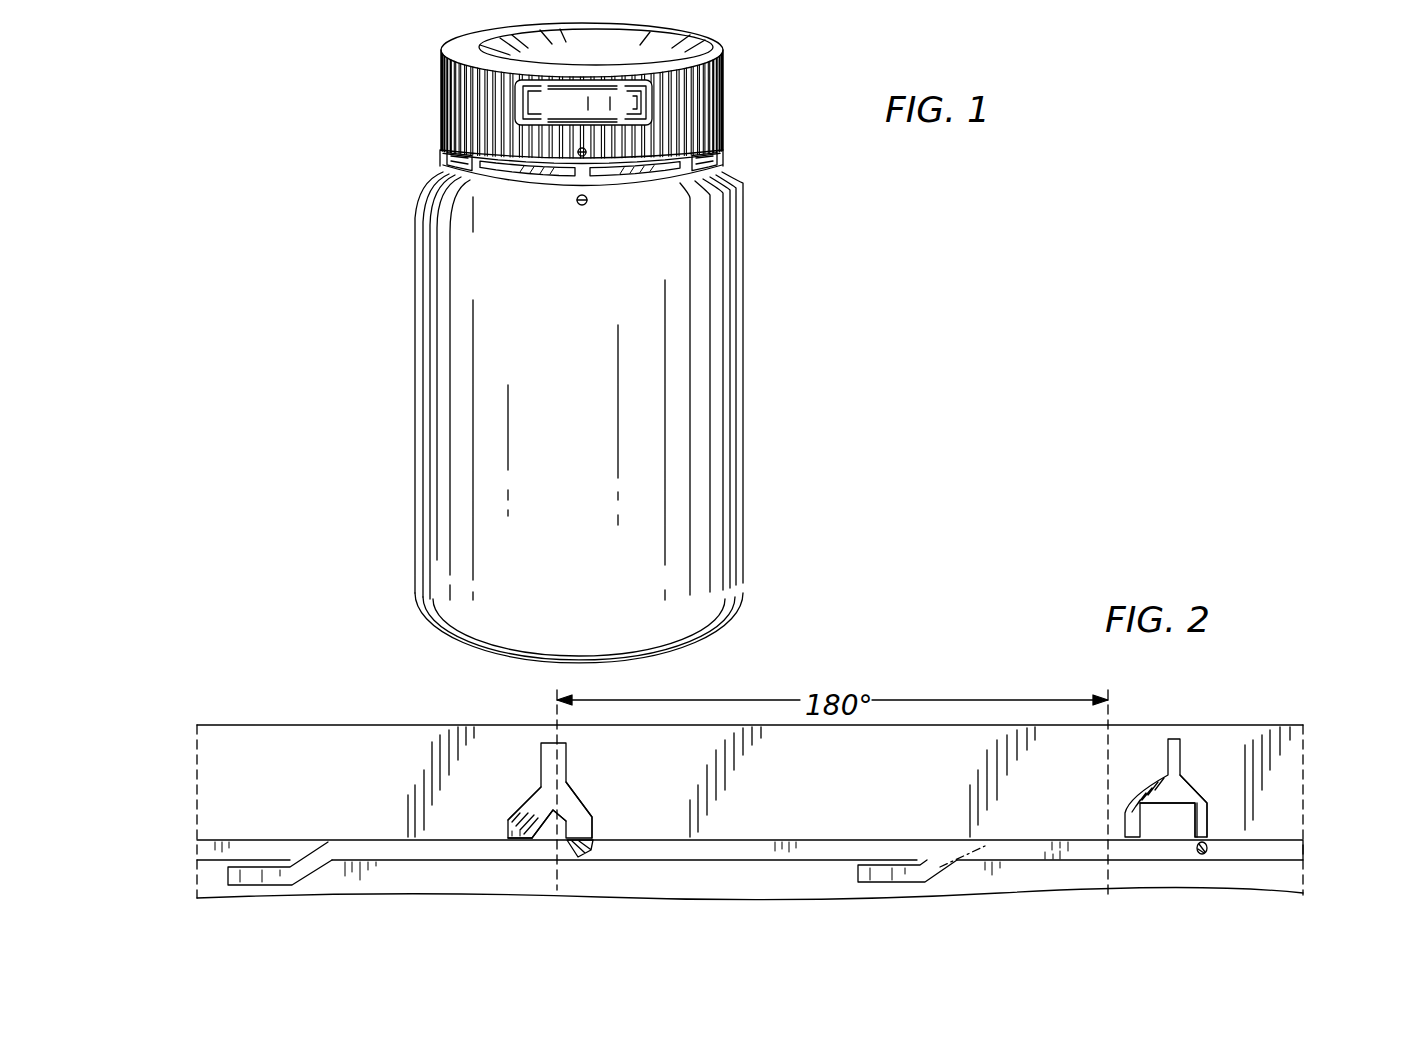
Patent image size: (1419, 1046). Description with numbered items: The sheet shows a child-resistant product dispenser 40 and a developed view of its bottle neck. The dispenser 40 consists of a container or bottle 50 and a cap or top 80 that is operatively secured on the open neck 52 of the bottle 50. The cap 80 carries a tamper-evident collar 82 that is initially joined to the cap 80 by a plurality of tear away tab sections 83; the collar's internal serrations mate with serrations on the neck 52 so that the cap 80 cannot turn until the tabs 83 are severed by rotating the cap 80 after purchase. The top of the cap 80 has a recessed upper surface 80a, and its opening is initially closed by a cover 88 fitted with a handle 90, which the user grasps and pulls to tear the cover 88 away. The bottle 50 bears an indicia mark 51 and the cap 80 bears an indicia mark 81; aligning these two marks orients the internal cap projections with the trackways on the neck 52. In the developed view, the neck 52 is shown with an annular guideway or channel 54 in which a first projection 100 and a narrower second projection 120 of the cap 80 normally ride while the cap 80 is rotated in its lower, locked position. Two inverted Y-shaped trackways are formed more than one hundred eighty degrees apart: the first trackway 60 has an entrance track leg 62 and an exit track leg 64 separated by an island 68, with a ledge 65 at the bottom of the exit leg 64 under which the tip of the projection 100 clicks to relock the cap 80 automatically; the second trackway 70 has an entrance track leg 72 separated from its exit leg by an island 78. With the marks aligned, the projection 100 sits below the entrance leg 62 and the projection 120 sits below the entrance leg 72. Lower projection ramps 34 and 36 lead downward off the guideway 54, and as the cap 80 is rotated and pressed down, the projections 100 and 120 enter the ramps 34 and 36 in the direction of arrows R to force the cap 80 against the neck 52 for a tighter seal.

In FIG. 1, the product dispenser 40 is at (762, 342).
In FIG. 1, the container or bottle 50 is at (748, 408).
In FIG. 1, the indicia mark 51 is at (582, 206).
In FIG. 1, the cap or top 80 is at (723, 75).
In FIG. 1, the cap top recess 80a is at (478, 36).
In FIG. 1, the indicia mark 81 is at (578, 153).
In FIG. 1, the collar 82 is at (724, 158).
In FIG. 1, the tear away tab sections 83 is at (735, 195).
In FIG. 1, the cover 88 is at (548, 103).
In FIG. 1, the handle 90 is at (646, 110).
In FIG. 2, the neck 52 is at (1280, 726).
In FIG. 2, the annular guideway or channel 54 is at (1303, 845).
In FIG. 2, the lower projection ramp 34 is at (245, 867).
In FIG. 2, the lower projection ramp 36 is at (876, 866).
In FIG. 2, the trackway or guideway 60 is at (545, 742).
In FIG. 2, the first or entrance track leg 62 is at (590, 830).
In FIG. 2, the second or exit track leg 64 is at (522, 815).
In FIG. 2, the ledge 65 is at (520, 842).
In FIG. 2, the island 68 is at (567, 822).
In FIG. 2, the first projection or pin 100 is at (594, 871).
In FIG. 2, the second trackway 70 is at (1173, 740).
In FIG. 2, the entrance track leg 72 is at (1208, 821).
In FIG. 2, the island 78 is at (1146, 826).
In FIG. 2, the second projection 120 is at (1206, 855).
In FIG. 2, the arrows R is at (292, 878).